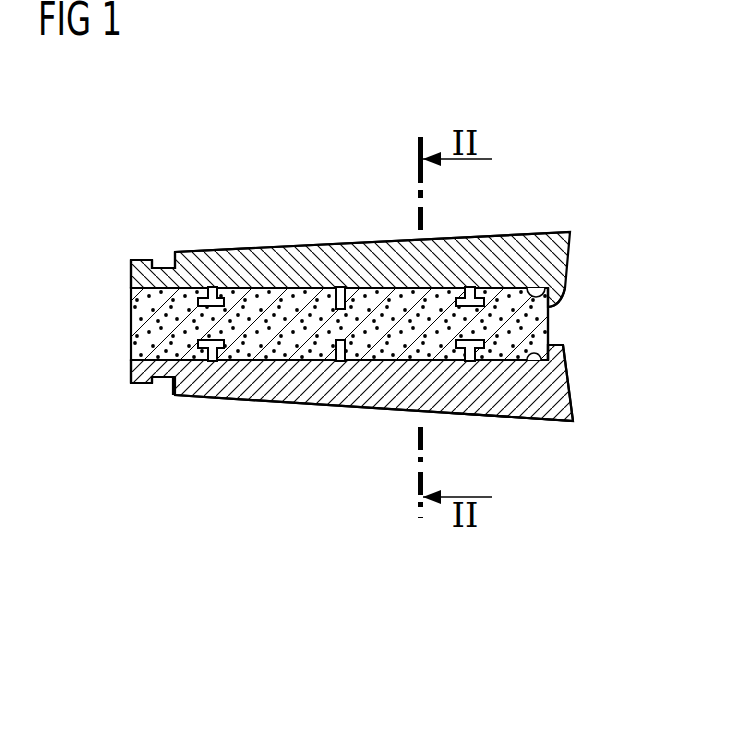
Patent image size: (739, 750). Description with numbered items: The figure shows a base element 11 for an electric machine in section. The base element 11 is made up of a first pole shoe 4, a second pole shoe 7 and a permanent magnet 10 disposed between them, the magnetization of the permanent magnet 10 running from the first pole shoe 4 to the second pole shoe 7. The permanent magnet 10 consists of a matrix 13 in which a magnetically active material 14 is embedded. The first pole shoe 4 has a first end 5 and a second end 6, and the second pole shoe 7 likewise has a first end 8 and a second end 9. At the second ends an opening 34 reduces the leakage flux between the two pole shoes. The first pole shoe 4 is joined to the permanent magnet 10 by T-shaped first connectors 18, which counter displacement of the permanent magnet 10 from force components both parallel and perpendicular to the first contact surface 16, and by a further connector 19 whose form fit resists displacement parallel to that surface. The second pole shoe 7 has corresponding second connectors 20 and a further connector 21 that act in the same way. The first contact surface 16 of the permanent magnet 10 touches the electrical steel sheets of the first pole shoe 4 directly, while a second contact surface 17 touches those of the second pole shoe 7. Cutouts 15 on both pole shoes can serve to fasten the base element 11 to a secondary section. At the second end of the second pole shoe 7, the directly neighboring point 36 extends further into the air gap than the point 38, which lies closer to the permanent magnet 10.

The base element 11 is at (323, 129).
The first pole shoe 4 is at (232, 265).
The second pole shoe 7 is at (279, 392).
The permanent magnet 10 is at (131, 315).
The matrix 13 is at (281, 300).
The magnetically active material 14 is at (316, 302).
The cutouts 15 is at (165, 266).
The first connectors 18 is at (211, 289).
The second connectors 20 is at (213, 361).
The further connector 19 is at (341, 288).
The further connector 21 is at (340, 361).
The first contact surface 16 is at (533, 307).
The first end 5 is at (133, 259).
The first end 8 is at (132, 400).
The second end 6 is at (562, 228).
The second end 9 is at (562, 440).
The second contact surface 17 is at (534, 412).
The opening 34 is at (556, 309).
The directly neighboring point 36 is at (576, 423).
The point 38 is at (569, 347).